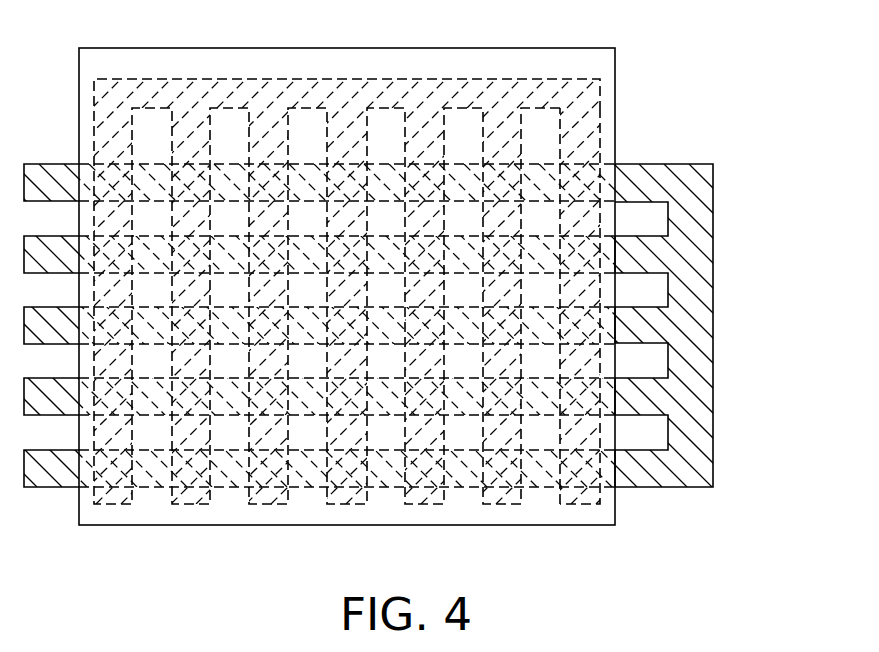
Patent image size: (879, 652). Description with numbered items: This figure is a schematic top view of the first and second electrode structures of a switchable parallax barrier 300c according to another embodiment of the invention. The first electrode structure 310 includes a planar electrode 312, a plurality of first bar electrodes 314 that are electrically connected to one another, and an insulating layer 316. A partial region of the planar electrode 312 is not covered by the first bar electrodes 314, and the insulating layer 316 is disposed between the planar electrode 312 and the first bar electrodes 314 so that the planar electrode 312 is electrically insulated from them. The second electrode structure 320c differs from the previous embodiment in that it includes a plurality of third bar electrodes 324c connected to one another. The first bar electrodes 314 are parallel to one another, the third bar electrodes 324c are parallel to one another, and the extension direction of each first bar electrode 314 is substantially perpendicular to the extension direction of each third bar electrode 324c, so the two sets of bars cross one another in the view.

The switchable parallax barrier 300c is at (439, 310).
The first electrode structure 310 is at (439, 265).
The planar electrode 312 is at (551, 66).
The first bar electrodes 314 is at (600, 88).
The insulating layer 316 is at (597, 118).
The second electrode structure 320c is at (439, 325).
The third bar electrodes 324c is at (650, 252).